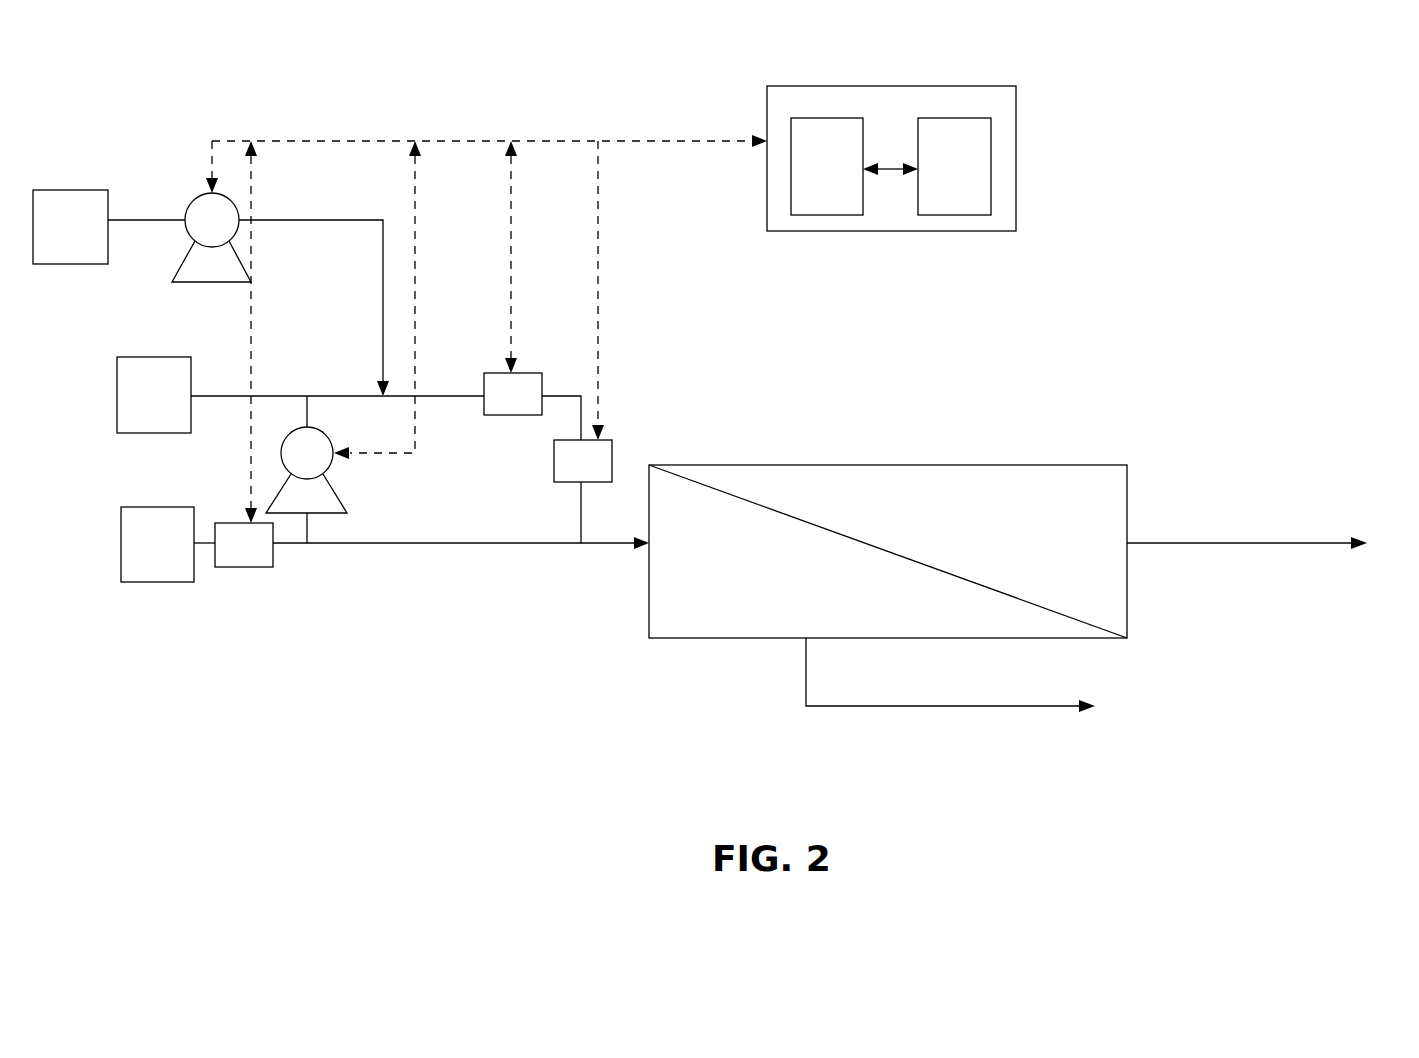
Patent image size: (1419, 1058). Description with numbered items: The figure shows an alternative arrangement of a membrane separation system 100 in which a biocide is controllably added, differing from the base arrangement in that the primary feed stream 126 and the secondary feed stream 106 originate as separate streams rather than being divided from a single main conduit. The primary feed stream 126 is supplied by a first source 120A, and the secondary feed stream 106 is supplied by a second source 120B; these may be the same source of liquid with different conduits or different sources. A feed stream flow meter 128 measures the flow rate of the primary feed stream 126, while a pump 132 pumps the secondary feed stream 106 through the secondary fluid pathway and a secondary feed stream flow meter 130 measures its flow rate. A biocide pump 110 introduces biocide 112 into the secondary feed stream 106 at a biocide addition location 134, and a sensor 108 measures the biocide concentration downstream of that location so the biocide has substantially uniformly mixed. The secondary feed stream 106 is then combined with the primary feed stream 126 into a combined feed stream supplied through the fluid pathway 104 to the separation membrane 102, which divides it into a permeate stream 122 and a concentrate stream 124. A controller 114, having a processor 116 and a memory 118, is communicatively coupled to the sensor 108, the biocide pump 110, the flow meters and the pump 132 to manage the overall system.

The membrane separation system 100 is at (1372, 180).
The separation membrane 102 is at (1083, 465).
The fluid pathway 104 is at (605, 545).
The secondary feed stream 106 is at (458, 396).
The sensor 108 is at (495, 405).
The biocide pump 110 is at (197, 229).
The biocide 112 is at (91, 237).
The controller 114 is at (1018, 157).
The processor 116 is at (847, 179).
The memory 118 is at (933, 179).
The first source 120A is at (129, 556).
The second source 120B is at (126, 406).
The permeate stream 122 is at (1222, 543).
The concentrate stream 124 is at (806, 688).
The primary feed stream 126 is at (490, 543).
The feed stream flow meter 128 is at (226, 556).
The secondary feed stream flow meter 130 is at (565, 472).
The pump 132 is at (292, 462).
The biocide addition location 134 is at (379, 391).